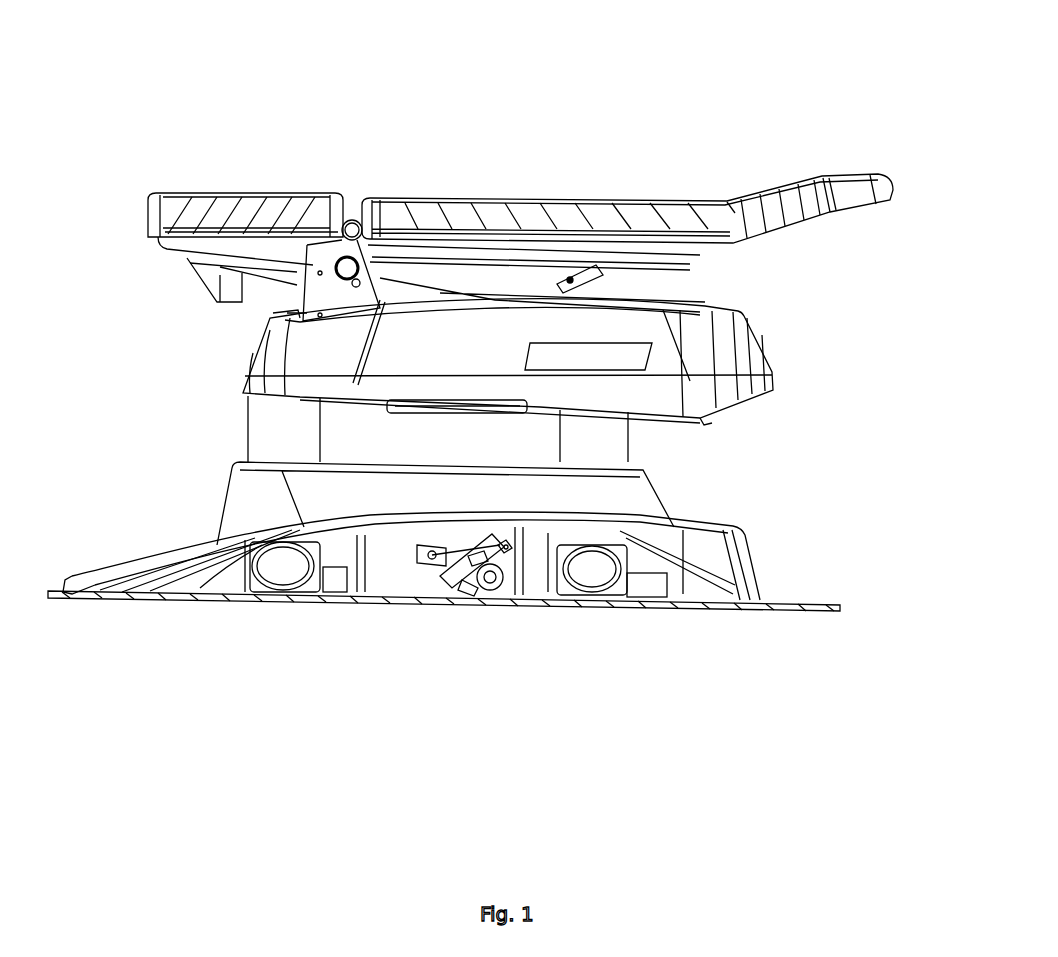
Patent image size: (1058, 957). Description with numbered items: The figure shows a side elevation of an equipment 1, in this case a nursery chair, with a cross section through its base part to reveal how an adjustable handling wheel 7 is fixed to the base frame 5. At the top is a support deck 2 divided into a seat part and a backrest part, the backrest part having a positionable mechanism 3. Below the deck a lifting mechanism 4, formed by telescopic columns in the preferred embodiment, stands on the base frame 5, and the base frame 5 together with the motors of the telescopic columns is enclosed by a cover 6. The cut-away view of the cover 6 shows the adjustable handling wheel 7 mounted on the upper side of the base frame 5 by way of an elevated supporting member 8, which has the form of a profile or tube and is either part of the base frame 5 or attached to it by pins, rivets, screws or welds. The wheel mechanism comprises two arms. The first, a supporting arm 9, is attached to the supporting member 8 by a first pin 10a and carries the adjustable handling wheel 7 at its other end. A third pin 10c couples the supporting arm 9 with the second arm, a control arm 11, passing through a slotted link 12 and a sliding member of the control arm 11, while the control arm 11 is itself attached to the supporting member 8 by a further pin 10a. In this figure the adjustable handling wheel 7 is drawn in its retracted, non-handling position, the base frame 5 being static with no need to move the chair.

The equipment 1 is at (500, 426).
The support deck 2 is at (148, 220).
The positionable mechanism 3 is at (603, 280).
The lifting mechanism 4 is at (238, 420).
The base frame 5 is at (368, 578).
The cover 6 is at (746, 542).
The adjustable handling wheel 7 is at (485, 563).
The elevated supporting member 8 is at (455, 543).
The supporting arm 9 is at (447, 566).
The first pin 10a is at (418, 556).
The third pin 10c is at (472, 583).
The control arm 11 is at (501, 565).
The slotted link 12 is at (488, 594).